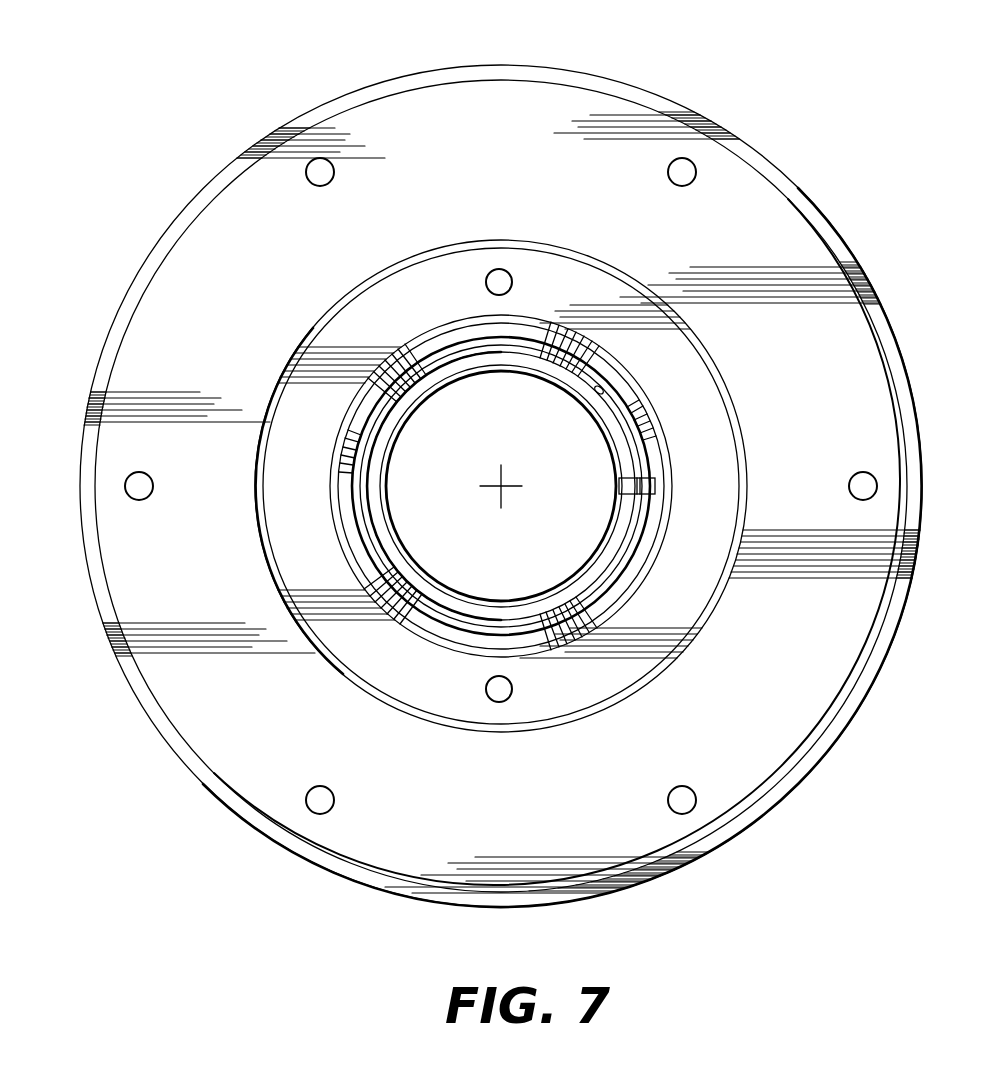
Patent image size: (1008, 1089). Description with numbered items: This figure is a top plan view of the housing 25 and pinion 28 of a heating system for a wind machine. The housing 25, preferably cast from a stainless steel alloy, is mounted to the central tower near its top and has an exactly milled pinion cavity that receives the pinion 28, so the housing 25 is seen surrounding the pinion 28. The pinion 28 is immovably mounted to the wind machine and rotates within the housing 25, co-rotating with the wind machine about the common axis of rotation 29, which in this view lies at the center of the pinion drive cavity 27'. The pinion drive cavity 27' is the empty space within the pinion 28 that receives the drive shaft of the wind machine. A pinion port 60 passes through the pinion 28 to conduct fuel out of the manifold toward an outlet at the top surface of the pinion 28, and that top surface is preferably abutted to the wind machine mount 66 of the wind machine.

The housing 25 is at (180, 318).
The pinion 28 is at (303, 507).
The pinion drive cavity 27' is at (501, 486).
The common axis of rotation 29 is at (510, 486).
The pinion port 60 is at (620, 494).
The wind machine mount 66 is at (710, 558).